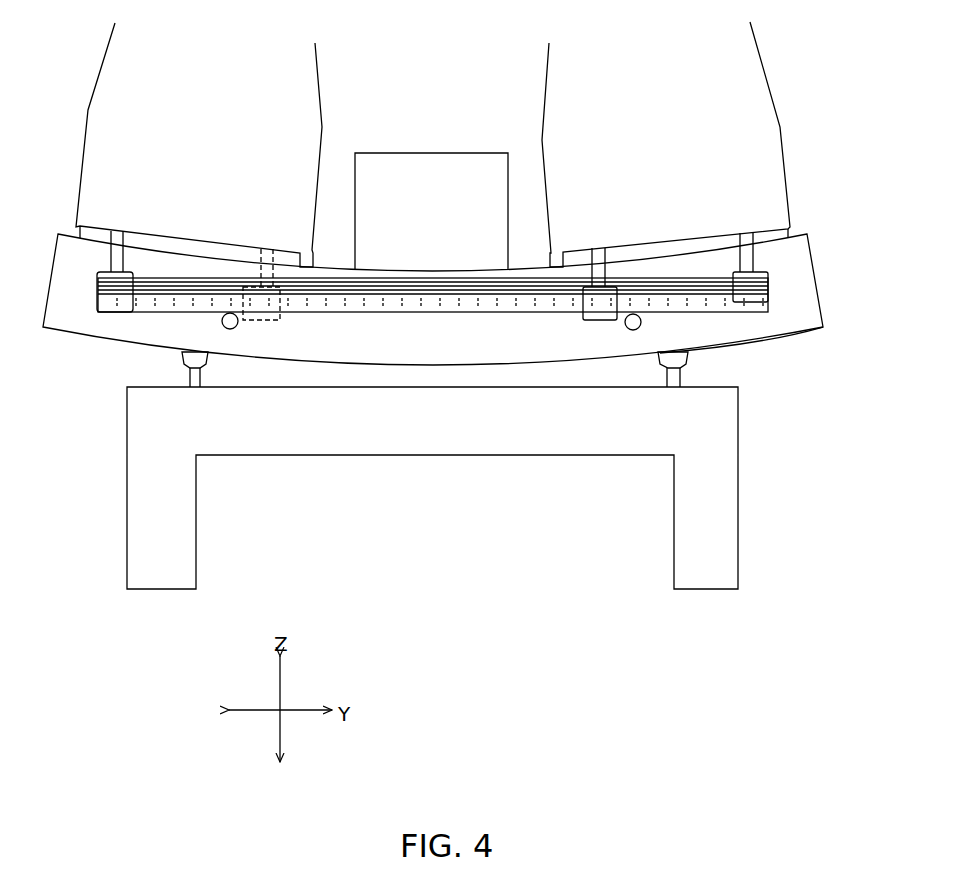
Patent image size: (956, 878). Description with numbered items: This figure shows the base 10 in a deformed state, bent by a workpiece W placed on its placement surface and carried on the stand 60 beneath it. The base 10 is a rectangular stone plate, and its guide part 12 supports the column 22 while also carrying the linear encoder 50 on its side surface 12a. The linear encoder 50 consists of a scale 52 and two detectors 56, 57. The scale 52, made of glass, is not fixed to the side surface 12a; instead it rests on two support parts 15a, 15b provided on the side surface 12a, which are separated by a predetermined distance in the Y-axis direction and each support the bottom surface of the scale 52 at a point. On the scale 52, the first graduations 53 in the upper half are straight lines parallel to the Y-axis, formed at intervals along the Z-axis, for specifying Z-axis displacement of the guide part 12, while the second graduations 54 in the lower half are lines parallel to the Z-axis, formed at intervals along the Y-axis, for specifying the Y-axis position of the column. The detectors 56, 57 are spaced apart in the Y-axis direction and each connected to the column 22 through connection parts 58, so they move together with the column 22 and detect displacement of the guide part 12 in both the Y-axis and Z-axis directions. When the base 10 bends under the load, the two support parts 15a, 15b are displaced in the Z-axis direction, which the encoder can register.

The base 10 is at (82, 358).
The guide part 12 is at (530, 268).
The side surface of guide part 12a is at (790, 329).
The support part 15a is at (230, 330).
The support part 15b is at (633, 331).
The column 22 is at (773, 138).
The linear encoder 50 is at (781, 281).
The scale 52 is at (456, 273).
The first graduations 53 is at (484, 282).
The second graduations 54 is at (497, 313).
The detector 56 is at (745, 303).
The detector 57 is at (600, 320).
The connection part 58 is at (747, 233).
The stand 60 is at (728, 430).
The weight W is at (437, 152).